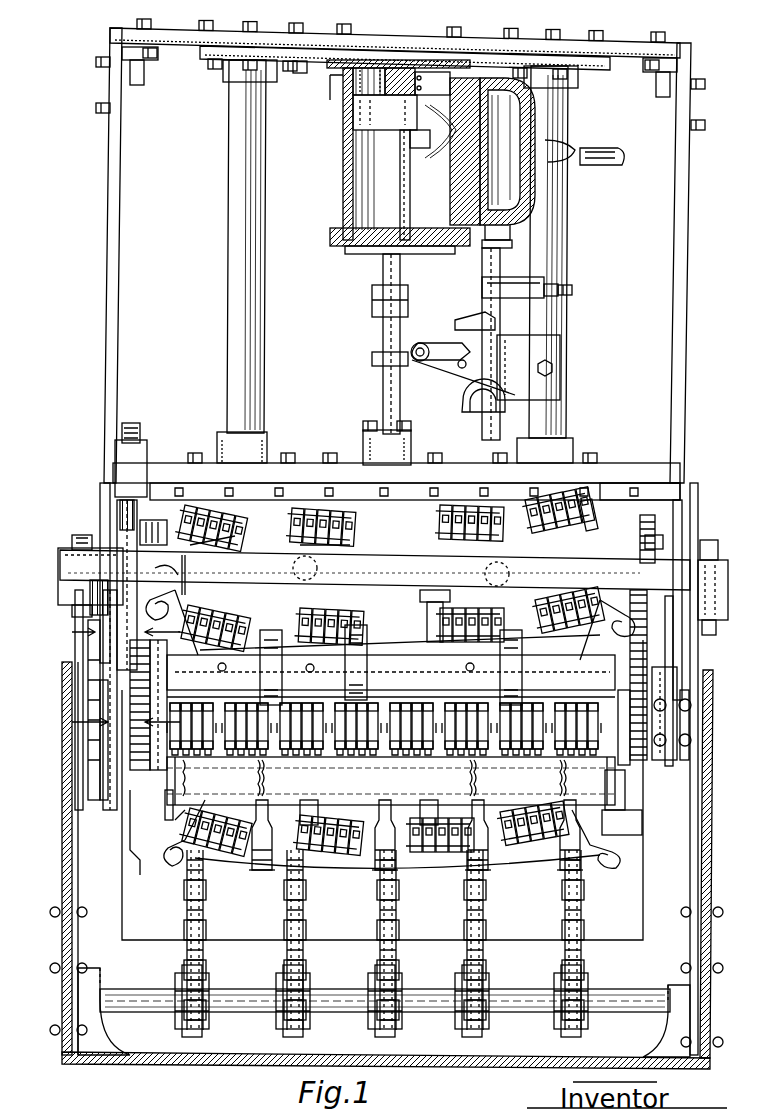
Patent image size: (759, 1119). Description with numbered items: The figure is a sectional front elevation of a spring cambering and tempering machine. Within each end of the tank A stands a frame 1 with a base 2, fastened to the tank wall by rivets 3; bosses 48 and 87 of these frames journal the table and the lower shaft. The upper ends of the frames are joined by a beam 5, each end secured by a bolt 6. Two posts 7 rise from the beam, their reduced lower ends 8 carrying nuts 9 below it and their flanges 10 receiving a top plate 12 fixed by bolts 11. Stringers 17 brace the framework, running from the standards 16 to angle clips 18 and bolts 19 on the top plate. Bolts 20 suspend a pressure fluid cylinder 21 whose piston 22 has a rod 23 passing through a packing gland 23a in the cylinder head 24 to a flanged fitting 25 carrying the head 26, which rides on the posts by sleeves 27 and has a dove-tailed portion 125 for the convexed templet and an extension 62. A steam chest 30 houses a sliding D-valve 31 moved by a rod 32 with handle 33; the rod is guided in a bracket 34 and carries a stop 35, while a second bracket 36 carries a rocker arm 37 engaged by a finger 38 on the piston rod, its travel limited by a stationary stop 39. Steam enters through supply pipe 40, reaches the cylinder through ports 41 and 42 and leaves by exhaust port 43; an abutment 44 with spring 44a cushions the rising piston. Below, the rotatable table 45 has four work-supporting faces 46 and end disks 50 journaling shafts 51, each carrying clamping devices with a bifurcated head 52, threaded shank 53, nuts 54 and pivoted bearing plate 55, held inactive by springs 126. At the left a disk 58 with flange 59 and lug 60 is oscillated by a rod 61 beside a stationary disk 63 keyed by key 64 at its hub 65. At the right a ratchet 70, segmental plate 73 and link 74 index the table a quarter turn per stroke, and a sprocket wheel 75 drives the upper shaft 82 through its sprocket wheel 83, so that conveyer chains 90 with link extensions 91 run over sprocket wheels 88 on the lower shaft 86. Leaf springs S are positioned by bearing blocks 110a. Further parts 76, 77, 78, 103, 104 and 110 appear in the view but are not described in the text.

The frame 1 is at (66, 890).
The base 2 is at (128, 1048).
The rivets 3 is at (52, 1030).
The beam 5 is at (660, 578).
The bolt 6 is at (82, 534).
The post 7 is at (230, 356).
The reduced lower end of post 8 is at (323, 711).
The nut 9 is at (232, 566).
The flanges 10 is at (240, 62).
The bolts 11 is at (300, 73).
The top plate 12 is at (624, 48).
The standards 16 is at (105, 602).
The stringers 17 is at (112, 272).
The angle clips 18 is at (133, 68).
The bolts 19 is at (100, 70).
The bolts 20 is at (445, 36).
The pressure fluid cylinder 21 is at (345, 140).
The piston 22 is at (380, 110).
The piston rod 23 is at (388, 182).
The packing gland 23a is at (392, 258).
The cylinder head 24 is at (418, 240).
The flanged fitting 25 is at (380, 432).
The head of the machine 26 is at (296, 475).
The sleeve 27 is at (252, 438).
The steam chest 30 is at (497, 210).
The sliding D-valve 31 is at (545, 102).
The valve rod 32 is at (488, 272).
The operating handle 33 is at (496, 414).
The bracket 34 is at (482, 286).
The stop 35 is at (470, 322).
The second bracket 36 is at (503, 350).
The rocker arm 37 is at (372, 358).
The finger 38 is at (372, 310).
The stationary stop 39 is at (462, 382).
The supply pipe 40 is at (592, 150).
The port 41 is at (452, 190).
The port 42 is at (432, 85).
The exhaust port 43 is at (450, 145).
The abutment 44 is at (398, 70).
The spring 44a is at (362, 72).
The rotatable table 45 is at (596, 790).
The work-supporting faces 46 is at (625, 805).
The bosses 48 is at (88, 712).
The disk 50 is at (653, 790).
The shafts 51 is at (391, 665).
The bifurcated head 52 is at (425, 840).
The threaded shank 53 is at (450, 862).
The nuts 54 is at (408, 866).
The bearing plate 55 is at (440, 600).
The disk 58 is at (128, 855).
The lateral circumferential flange 59 is at (165, 840).
The peripheral lug 60 is at (122, 672).
The rod 61 is at (80, 556).
The extension 62 is at (118, 468).
The stationary disk 63 is at (110, 782).
The key 64 is at (78, 690).
The hub portion 65 is at (150, 748).
The four-toothed ratchet 70 is at (690, 762).
The segmental plate 73 is at (665, 700).
The link 74 is at (686, 520).
The sprocket wheel 75 is at (645, 762).
The rod 76 is at (140, 722).
The link 77 is at (741, 712).
The block 78 is at (162, 526).
The shaft 82 is at (95, 590).
The sprocket wheel 83 is at (650, 530).
The shaft 86 is at (508, 995).
The bosses 87 is at (95, 978).
The sprocket wheels 88 is at (210, 990).
The chains 90 is at (285, 896).
The extensions 91 is at (358, 946).
The slat set 103 is at (418, 520).
The slat set 104 is at (500, 525).
The slat set 110 is at (365, 600).
The bearing blocks 110a is at (310, 615).
The dove-tailed portion 125 is at (608, 492).
The springs 126 is at (322, 830).
The tank A is at (338, 900).
The springs S is at (490, 729).